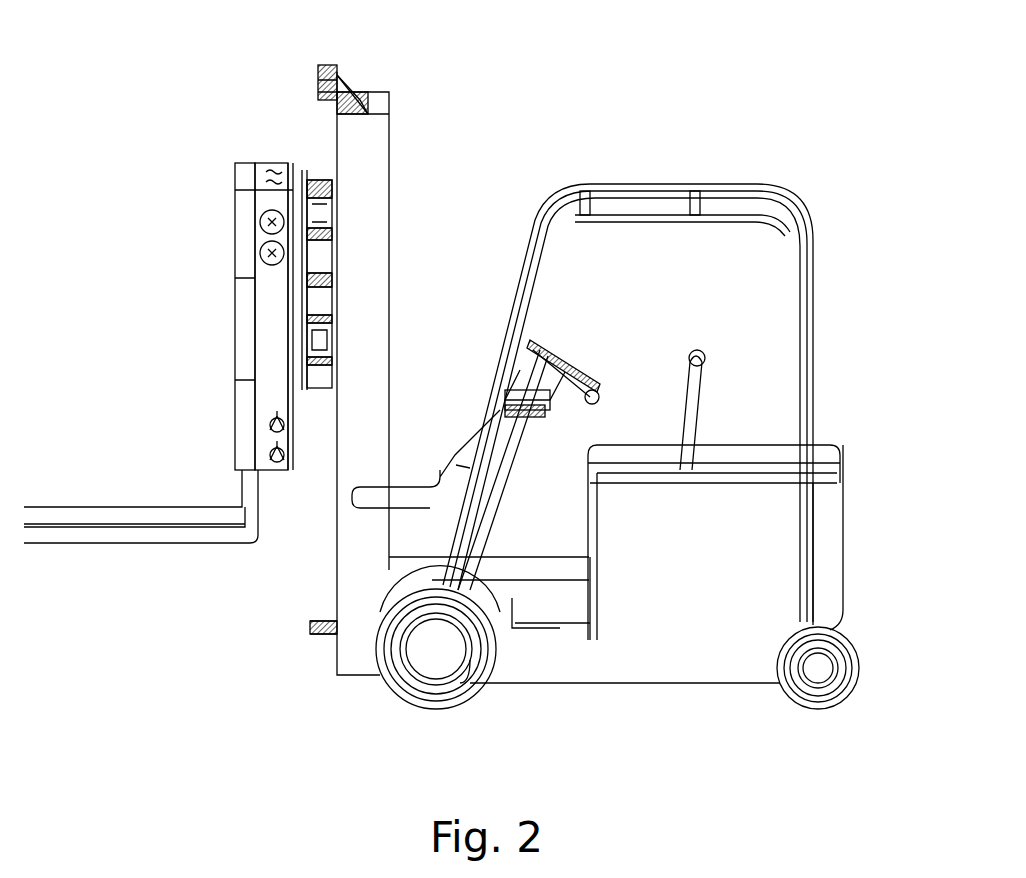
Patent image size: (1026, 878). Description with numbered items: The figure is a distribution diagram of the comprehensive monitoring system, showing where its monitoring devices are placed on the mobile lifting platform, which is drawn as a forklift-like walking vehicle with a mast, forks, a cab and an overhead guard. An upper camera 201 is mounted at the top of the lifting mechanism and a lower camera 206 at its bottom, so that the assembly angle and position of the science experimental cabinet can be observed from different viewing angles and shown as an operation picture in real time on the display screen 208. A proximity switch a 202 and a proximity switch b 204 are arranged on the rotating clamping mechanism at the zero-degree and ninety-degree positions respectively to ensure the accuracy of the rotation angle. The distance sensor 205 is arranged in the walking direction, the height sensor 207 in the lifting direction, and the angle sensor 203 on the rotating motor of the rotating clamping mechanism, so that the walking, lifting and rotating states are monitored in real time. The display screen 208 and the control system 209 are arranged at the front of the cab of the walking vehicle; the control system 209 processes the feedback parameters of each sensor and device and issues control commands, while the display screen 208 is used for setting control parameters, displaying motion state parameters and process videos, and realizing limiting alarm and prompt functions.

The upper camera 201 is at (320, 96).
The proximity switch a 202 is at (313, 172).
The angle sensor 203 is at (317, 248).
The proximity switch b 204 is at (317, 282).
The distance sensor 205 is at (320, 328).
The lower camera 206 is at (312, 628).
The height sensor 207 is at (338, 72).
The display screen 208 is at (538, 345).
The control system 209 is at (497, 466).